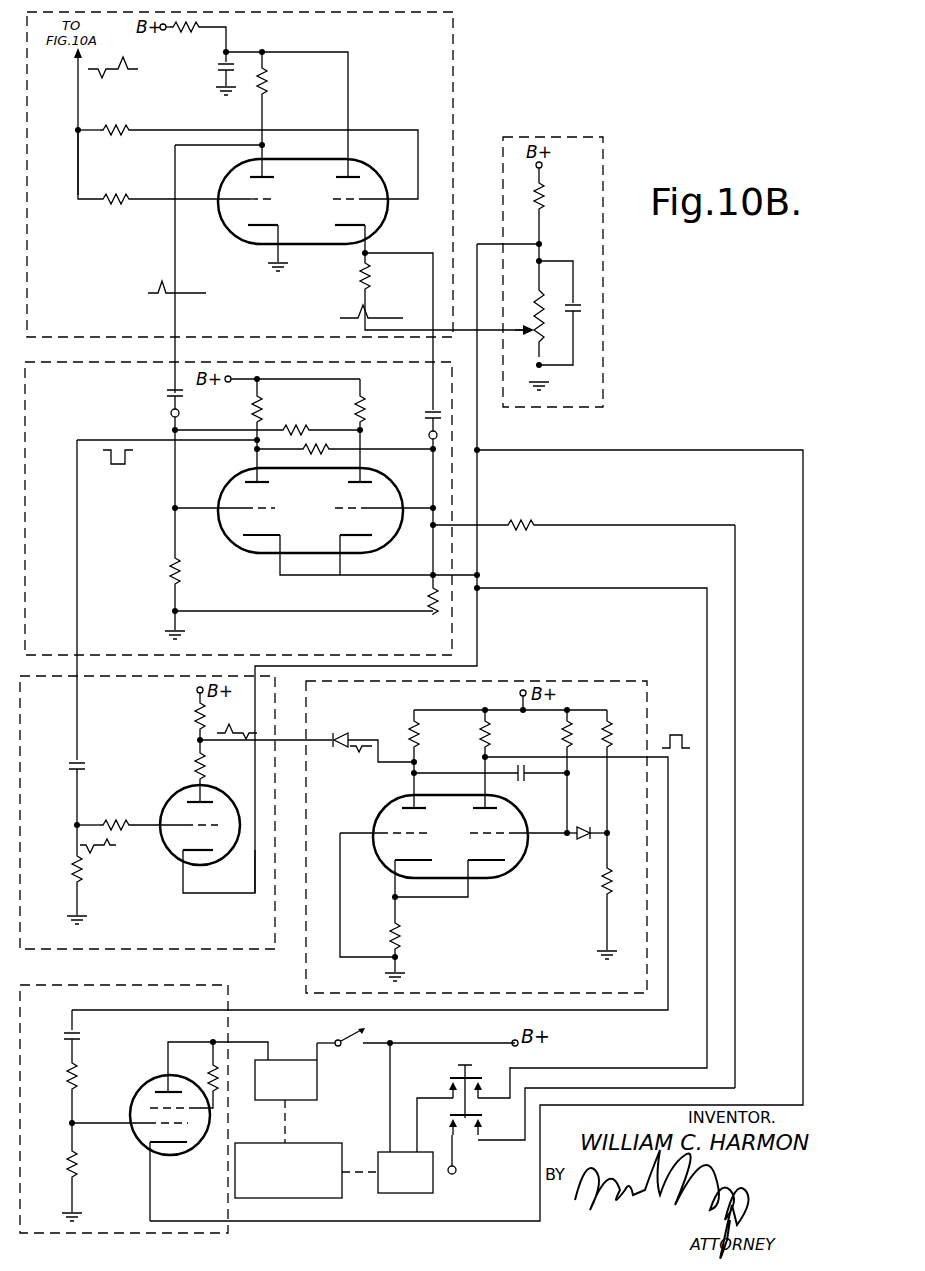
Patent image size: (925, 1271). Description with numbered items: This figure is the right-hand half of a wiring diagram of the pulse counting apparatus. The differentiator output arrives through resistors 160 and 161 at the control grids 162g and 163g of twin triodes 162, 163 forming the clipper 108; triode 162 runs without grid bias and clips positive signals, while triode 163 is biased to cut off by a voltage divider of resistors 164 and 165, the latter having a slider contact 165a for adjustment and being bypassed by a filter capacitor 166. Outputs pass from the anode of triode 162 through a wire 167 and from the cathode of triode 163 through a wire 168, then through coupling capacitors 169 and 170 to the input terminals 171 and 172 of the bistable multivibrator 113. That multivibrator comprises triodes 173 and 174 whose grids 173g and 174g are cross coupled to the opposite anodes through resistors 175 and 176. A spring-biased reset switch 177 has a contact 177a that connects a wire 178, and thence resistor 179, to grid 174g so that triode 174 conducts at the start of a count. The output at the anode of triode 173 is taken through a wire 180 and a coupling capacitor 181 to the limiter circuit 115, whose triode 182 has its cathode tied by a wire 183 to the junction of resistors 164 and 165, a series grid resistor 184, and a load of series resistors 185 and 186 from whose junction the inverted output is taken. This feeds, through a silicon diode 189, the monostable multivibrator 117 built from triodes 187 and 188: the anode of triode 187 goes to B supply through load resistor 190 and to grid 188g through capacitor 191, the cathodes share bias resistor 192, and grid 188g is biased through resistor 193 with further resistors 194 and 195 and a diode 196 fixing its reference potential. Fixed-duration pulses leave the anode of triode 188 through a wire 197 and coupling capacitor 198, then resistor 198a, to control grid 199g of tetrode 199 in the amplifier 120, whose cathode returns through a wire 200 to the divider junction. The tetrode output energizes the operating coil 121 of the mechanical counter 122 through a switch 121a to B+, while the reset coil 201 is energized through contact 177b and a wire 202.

The clipper 108 is at (453, 67).
The bistable multivibrator 113 is at (452, 602).
The limiter circuit 115 is at (275, 870).
The monostable multivibrator 117 is at (647, 705).
The amplifier 120 is at (228, 1000).
The operating coil 121 is at (318, 1086).
The switch 121a is at (343, 1035).
The mechanical counter 122 is at (318, 1135).
The resistor 160 is at (118, 200).
The resistor 161 is at (118, 131).
The triode 162 is at (236, 163).
The control grid 162g is at (250, 201).
The triode 163 is at (403, 170).
The control grid 163g is at (345, 201).
The resistor 164 is at (545, 208).
The resistor 165 is at (528, 317).
The slider contact 165a is at (527, 338).
The capacitor 166 is at (583, 305).
The wire 167 is at (177, 320).
The wire 168 is at (433, 292).
The coupling capacitor 169 is at (165, 392).
The coupling capacitor 170 is at (424, 418).
The input terminal 171 is at (170, 412).
The input terminal 172 is at (428, 436).
The triode 173 is at (240, 473).
The grid 173g is at (245, 510).
The triode 174 is at (410, 477).
The grid 174g is at (350, 510).
The resistor 175 is at (274, 404).
The resistor 176 is at (316, 442).
The reset switch 177 is at (442, 1085).
The contact 177a is at (487, 1118).
The contact 177b is at (472, 1076).
The wire 178 is at (737, 1058).
The resistor 179 is at (518, 520).
The wire 180 is at (77, 490).
The coupling capacitor 181 is at (85, 766).
The triode 182 is at (186, 800).
The wire 183 is at (478, 630).
The series grid resistor 184 is at (130, 820).
The resistor 185 is at (195, 712).
The resistor 186 is at (205, 763).
The triode 187 is at (378, 811).
The triode 188 is at (523, 808).
The grid 188g is at (503, 837).
The silicon diode 189 is at (347, 726).
The load resistor 190 is at (420, 735).
The capacitor 191 is at (524, 782).
The bias resistor 192 is at (405, 940).
The resistor 193 is at (562, 736).
The resistor 194 is at (612, 738).
The resistor 195 is at (613, 880).
The diode 196 is at (581, 843).
The wire 197 is at (668, 845).
The coupling capacitor 198 is at (64, 1039).
The resistor 198a is at (68, 1076).
The tetrode 199 is at (162, 1088).
The control grid 199g is at (155, 1125).
The wire 200 is at (802, 868).
The reset coil 201 is at (388, 1196).
The wire 202 is at (707, 1052).